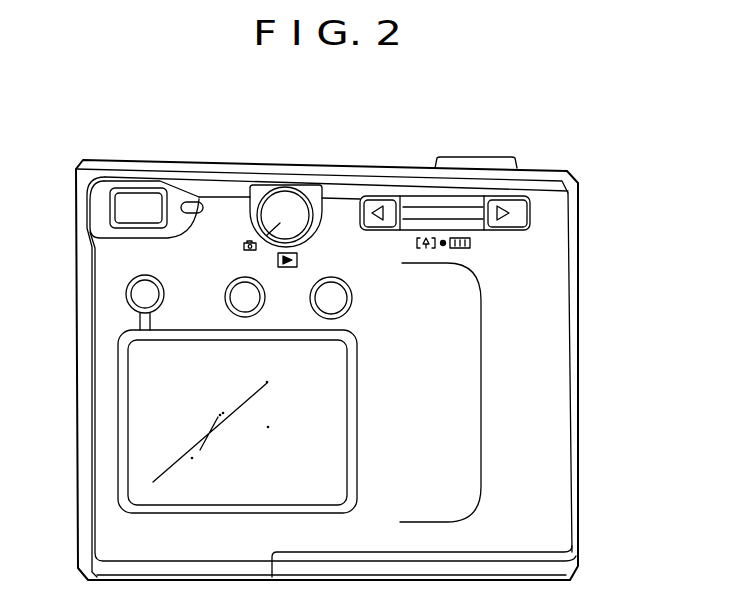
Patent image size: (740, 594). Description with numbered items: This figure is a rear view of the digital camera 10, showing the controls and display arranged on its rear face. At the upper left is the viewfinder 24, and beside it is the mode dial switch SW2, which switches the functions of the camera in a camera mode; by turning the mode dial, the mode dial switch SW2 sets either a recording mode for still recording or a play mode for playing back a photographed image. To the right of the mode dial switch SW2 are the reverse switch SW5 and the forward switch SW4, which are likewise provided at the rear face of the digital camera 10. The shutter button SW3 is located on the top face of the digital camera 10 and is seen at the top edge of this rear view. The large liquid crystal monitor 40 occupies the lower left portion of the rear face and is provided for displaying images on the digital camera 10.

The digital camera 10 is at (620, 156).
The viewfinder 24 is at (141, 205).
The liquid crystal monitor 40 is at (150, 393).
The mode dial switch SW2 is at (288, 207).
The shutter button SW3 is at (489, 157).
The forward switch SW4 is at (520, 208).
The reverse switch SW5 is at (376, 208).